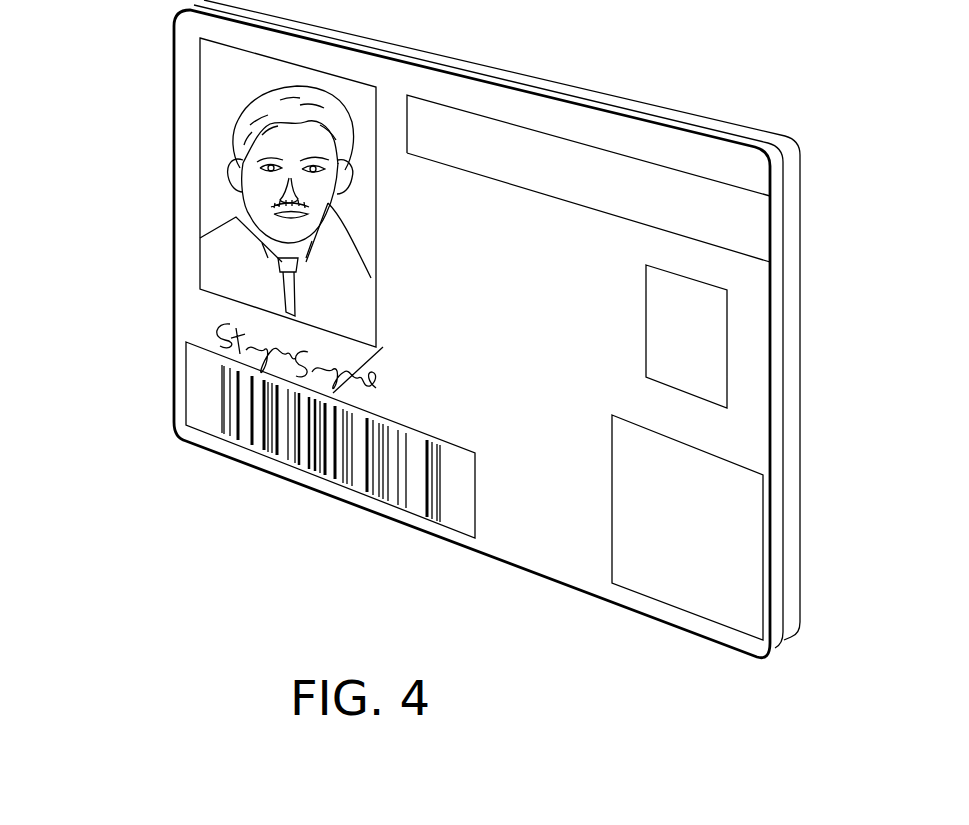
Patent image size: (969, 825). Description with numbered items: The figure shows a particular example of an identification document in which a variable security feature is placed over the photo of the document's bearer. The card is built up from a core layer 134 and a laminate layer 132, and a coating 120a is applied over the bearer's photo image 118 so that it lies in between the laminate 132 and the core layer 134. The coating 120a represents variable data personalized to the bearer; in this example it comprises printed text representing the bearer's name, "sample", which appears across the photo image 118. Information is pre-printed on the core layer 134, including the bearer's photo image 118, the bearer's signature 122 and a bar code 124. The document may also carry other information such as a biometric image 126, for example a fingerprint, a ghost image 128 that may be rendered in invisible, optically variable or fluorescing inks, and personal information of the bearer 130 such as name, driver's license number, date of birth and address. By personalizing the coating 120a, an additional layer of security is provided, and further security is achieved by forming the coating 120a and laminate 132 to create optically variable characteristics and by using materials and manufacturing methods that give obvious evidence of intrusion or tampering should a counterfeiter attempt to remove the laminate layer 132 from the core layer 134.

The photo image 118 is at (288, 192).
The coating 120a is at (217, 257).
The bearer's signature 122 is at (223, 330).
The bar code 124 is at (195, 408).
The biometric image 126 is at (748, 224).
The ghost image 128 is at (707, 368).
The personal information of the bearer 130 is at (708, 528).
The laminate layer 132 is at (775, 618).
The core layer 134 is at (792, 552).